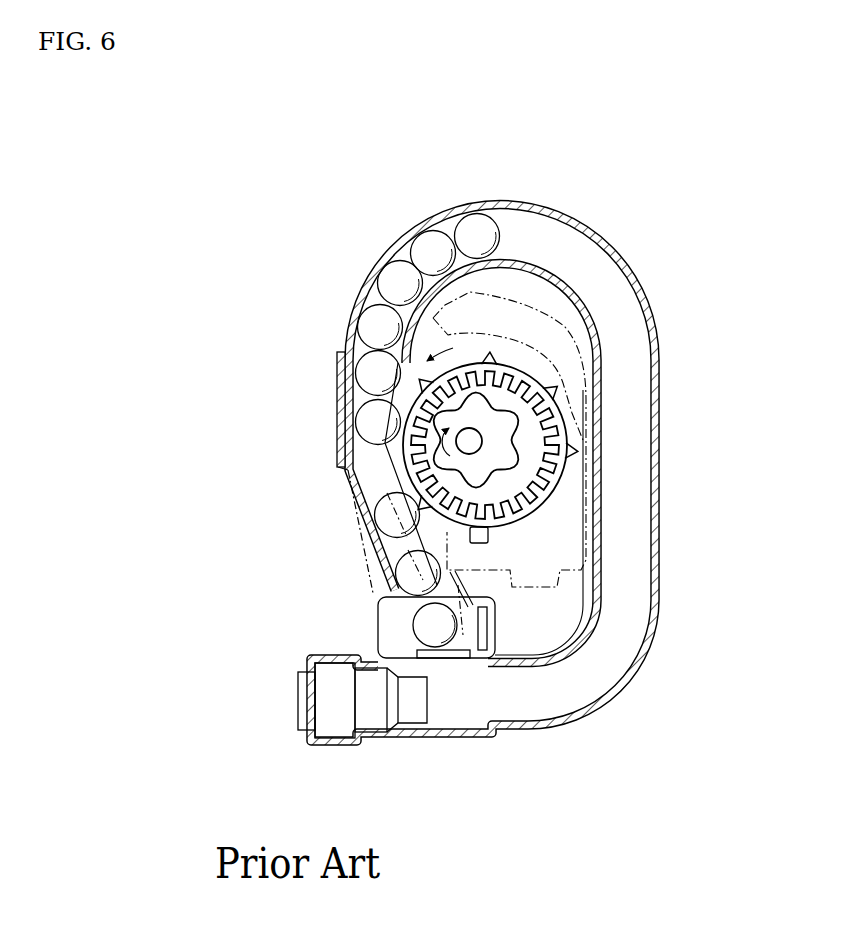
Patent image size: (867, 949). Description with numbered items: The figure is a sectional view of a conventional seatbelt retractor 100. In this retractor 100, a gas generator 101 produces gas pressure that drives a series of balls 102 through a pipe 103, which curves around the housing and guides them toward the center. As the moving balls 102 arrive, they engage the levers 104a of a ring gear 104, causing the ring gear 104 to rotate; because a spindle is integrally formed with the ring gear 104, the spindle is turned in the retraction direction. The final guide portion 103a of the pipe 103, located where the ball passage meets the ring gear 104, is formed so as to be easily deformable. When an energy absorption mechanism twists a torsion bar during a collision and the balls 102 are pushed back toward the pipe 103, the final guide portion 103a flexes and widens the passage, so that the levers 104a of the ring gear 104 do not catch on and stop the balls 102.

The retractor 100 is at (367, 242).
The gas generator 101 is at (327, 698).
The balls 102 is at (473, 225).
The pipe 103 is at (656, 370).
The final guide portion 103a is at (368, 555).
The ring gear 104 is at (563, 393).
The levers 104a is at (423, 513).